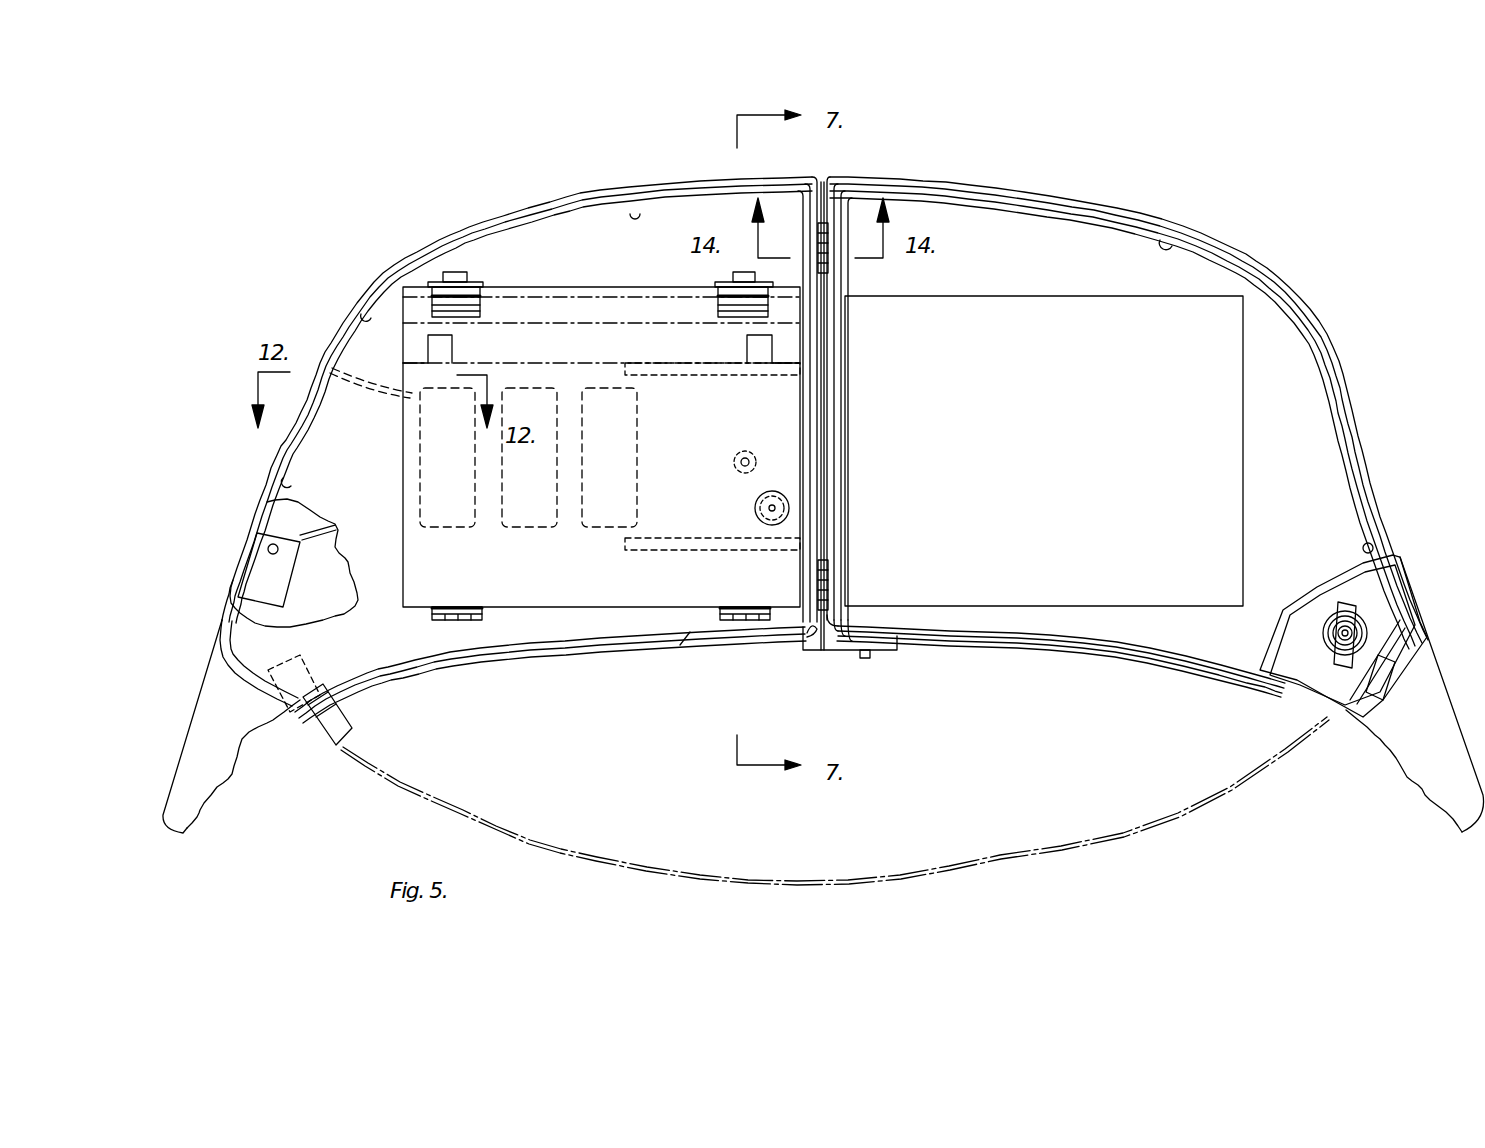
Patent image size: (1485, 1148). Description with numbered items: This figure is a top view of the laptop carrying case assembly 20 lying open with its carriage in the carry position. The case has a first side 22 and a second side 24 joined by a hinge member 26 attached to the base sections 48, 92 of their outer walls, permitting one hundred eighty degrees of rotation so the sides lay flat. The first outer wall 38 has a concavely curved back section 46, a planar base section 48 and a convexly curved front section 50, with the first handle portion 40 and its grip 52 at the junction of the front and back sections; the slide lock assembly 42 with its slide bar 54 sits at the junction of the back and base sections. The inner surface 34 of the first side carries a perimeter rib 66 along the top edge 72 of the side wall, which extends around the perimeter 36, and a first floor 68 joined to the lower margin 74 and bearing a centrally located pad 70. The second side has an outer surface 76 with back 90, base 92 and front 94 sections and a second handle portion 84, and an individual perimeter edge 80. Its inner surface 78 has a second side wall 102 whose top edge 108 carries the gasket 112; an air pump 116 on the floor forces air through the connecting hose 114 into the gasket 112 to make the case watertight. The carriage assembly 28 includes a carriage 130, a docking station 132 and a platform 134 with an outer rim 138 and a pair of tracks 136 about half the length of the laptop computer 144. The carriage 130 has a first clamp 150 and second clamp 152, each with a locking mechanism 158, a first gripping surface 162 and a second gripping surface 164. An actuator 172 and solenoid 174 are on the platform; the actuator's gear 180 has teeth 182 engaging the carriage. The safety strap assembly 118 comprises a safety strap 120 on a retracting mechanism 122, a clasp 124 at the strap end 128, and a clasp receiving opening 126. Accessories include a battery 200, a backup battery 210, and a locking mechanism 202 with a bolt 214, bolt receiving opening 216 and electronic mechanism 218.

The laptop carrying case assembly 20 is at (1300, 155).
The first side 22 is at (1363, 450).
The second side 24 is at (398, 260).
The hinge member 26 is at (826, 240).
The carriage assembly 28 is at (552, 265).
The inner surface 34 is at (1300, 489).
The perimeter 36 is at (1302, 315).
The first outer wall 38 is at (1200, 672).
The first handle portion 40 is at (1435, 698).
The slide lock assembly 42 is at (824, 688).
The back section 46 is at (1003, 652).
The base section 48 is at (830, 190).
The front section 50 is at (1257, 268).
The grip 52 is at (1410, 788).
The slide bar 54 is at (866, 658).
The perimeter rib 66 is at (1065, 198).
The first floor 68 is at (1295, 410).
The pad 70 is at (1045, 298).
The top edge 72 is at (1115, 657).
The lower margin 74 is at (1185, 245).
The outer surface 76 is at (660, 185).
The inner surface 78 is at (633, 212).
The individual perimeter edge 80 is at (400, 680).
The second handle portion 84 is at (200, 722).
The back section 90 is at (582, 660).
The base section 92 is at (808, 628).
The front section 94 is at (332, 333).
The second side wall 102 is at (287, 478).
The top edge 108 is at (510, 660).
The gasket 112 is at (680, 637).
The connecting hose 114 is at (372, 398).
The air pump 116 is at (428, 465).
The safety strap assembly 118 is at (1430, 582).
The safety strap 120 is at (1125, 835).
The retracting mechanism 122 is at (1345, 610).
The clasp 124 is at (330, 730).
The clasp receiving opening 126 is at (305, 675).
The end 128 is at (343, 748).
The carriage 130 is at (490, 283).
The docking station 132 is at (602, 290).
The platform 134 is at (540, 225).
The tracks 136 is at (722, 377).
The outer rim 138 is at (366, 316).
The laptop computer 144 is at (601, 464).
The first clamp 150 is at (443, 620).
The second clamp 152 is at (730, 295).
The locking mechanism 158 is at (455, 275).
The first gripping surface 162 is at (455, 607).
The second gripping surface 164 is at (480, 300).
The actuator 172 is at (745, 450).
The solenoid 174 is at (755, 508).
The gear 180 is at (732, 460).
The teeth 182 is at (757, 465).
The battery 200 is at (527, 522).
The locking mechanism 202 is at (287, 590).
The backup battery 210 is at (597, 522).
The bolt 214 is at (1373, 545).
The bolt receiving opening 216 is at (267, 549).
The electronic mechanism 218 is at (245, 582).